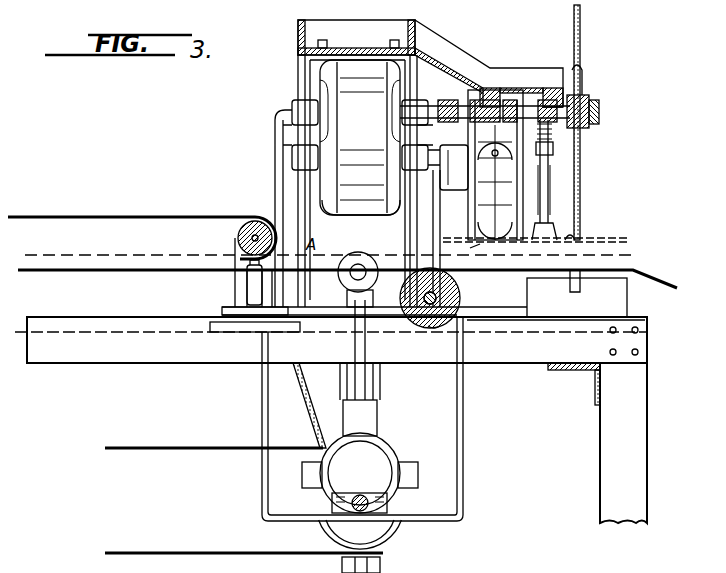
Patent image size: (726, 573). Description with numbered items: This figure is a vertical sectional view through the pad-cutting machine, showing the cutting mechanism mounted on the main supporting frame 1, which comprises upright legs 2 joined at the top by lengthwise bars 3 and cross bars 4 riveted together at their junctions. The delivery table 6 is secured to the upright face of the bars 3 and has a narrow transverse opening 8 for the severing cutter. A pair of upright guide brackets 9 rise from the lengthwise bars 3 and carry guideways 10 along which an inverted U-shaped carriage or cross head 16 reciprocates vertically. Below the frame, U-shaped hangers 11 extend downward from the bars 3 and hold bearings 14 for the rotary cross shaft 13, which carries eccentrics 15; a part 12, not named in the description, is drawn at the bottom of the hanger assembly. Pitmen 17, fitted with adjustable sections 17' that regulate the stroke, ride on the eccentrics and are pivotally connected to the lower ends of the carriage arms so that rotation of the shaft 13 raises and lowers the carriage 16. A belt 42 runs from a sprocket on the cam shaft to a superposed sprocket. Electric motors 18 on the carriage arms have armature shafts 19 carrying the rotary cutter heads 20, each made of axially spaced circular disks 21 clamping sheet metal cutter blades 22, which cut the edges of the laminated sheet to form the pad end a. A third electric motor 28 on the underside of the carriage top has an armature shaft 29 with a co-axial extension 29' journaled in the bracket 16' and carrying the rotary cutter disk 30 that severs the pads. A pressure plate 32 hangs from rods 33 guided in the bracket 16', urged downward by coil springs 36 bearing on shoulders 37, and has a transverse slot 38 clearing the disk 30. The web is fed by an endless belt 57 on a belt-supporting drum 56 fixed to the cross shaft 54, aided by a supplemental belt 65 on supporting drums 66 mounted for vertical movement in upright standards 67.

The main supporting frame 1 is at (647, 365).
The upright legs 2 is at (623, 443).
The lengthwise bars 3 is at (160, 362).
The cross bars 4 is at (585, 369).
The delivery table 6 is at (527, 279).
The opening 8 is at (581, 292).
The upright guide brackets 9 is at (280, 139).
The guideways 10 is at (298, 193).
The U-shaped hangers 11 is at (478, 505).
The nut 12 is at (381, 562).
The rotary cross shaft 13 is at (350, 490).
The bearings 14 is at (370, 492).
The eccentrics 15 is at (380, 460).
The carriage or cross head 16 is at (343, 163).
The bracket 16' is at (489, 63).
The pitmen 17 is at (374, 368).
The adjustable sections 17' is at (345, 279).
The electric motors 18 is at (352, 214).
The armature shafts 19 is at (444, 169).
The rotary cutter heads 20 is at (530, 185).
The circular disks 21 is at (468, 128).
The cutter blades 22 is at (482, 250).
The third electric motor 28 is at (360, 137).
The armature shaft 29 is at (485, 100).
The co-axial extension 29' is at (597, 111).
The rotary cutter disk 30 is at (581, 43).
The pressure plate 32 is at (626, 243).
The rods 33 is at (549, 197).
The coil springs 36 is at (549, 130).
The shoulders 37 is at (553, 148).
The transverse slot 38 is at (580, 238).
The belt 42 is at (307, 403).
The cross shaft 54 is at (441, 297).
The belt-supporting drum 56 is at (436, 330).
The endless belt 57 is at (172, 276).
The supplemental belt 65 is at (165, 219).
The supporting drums 66 is at (238, 238).
The upright standards 67 is at (237, 292).
The pad end a is at (634, 256).